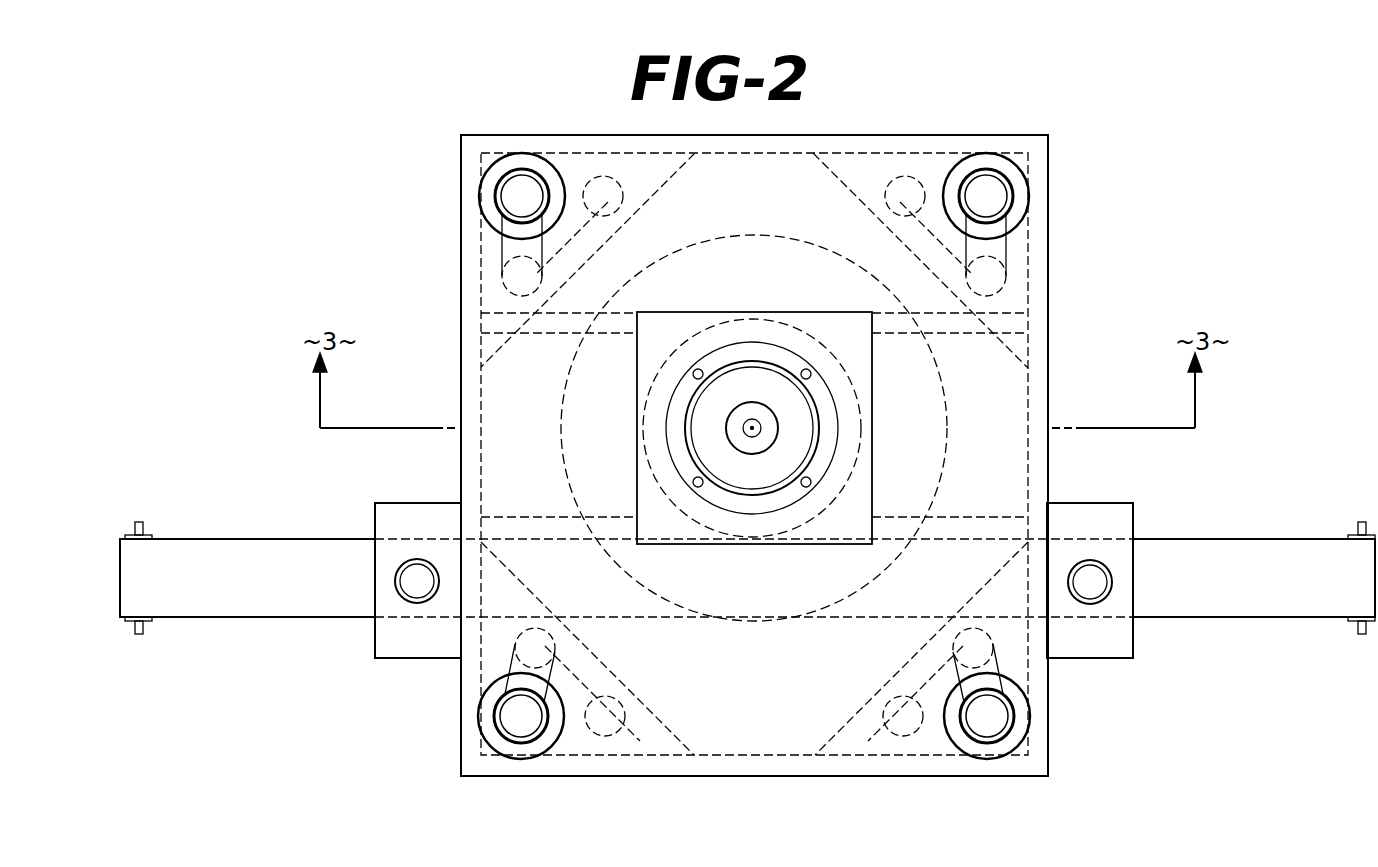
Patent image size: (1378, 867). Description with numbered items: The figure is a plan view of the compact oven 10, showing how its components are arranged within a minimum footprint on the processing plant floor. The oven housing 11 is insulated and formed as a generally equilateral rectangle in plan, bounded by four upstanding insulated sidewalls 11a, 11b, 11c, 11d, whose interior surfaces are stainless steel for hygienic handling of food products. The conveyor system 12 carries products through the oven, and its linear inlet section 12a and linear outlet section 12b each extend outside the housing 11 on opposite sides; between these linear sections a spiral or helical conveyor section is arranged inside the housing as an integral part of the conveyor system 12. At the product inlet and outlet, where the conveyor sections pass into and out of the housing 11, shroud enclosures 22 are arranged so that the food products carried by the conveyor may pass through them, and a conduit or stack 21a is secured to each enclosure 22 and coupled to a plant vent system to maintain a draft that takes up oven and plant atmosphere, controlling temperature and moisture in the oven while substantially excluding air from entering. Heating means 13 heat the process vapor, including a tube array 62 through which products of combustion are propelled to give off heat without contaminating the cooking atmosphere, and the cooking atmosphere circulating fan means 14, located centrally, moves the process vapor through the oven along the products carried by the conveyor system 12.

The compact oven 10 is at (378, 183).
The oven housing 11 is at (988, 128).
The sidewall 11a is at (806, 135).
The sidewall 11b is at (463, 287).
The sidewall 11c is at (748, 778).
The sidewall 11d is at (1050, 480).
The conveyor system 12 is at (779, 240).
The linear inlet section 12a is at (240, 540).
The linear outlet section 12b is at (1265, 612).
The heating means 13 is at (1012, 194).
The cooking atmosphere circulating fan means 14 is at (805, 437).
The conduit or stack 21a is at (411, 552).
The shroud enclosure 22 is at (425, 648).
The tube array 62 is at (583, 188).